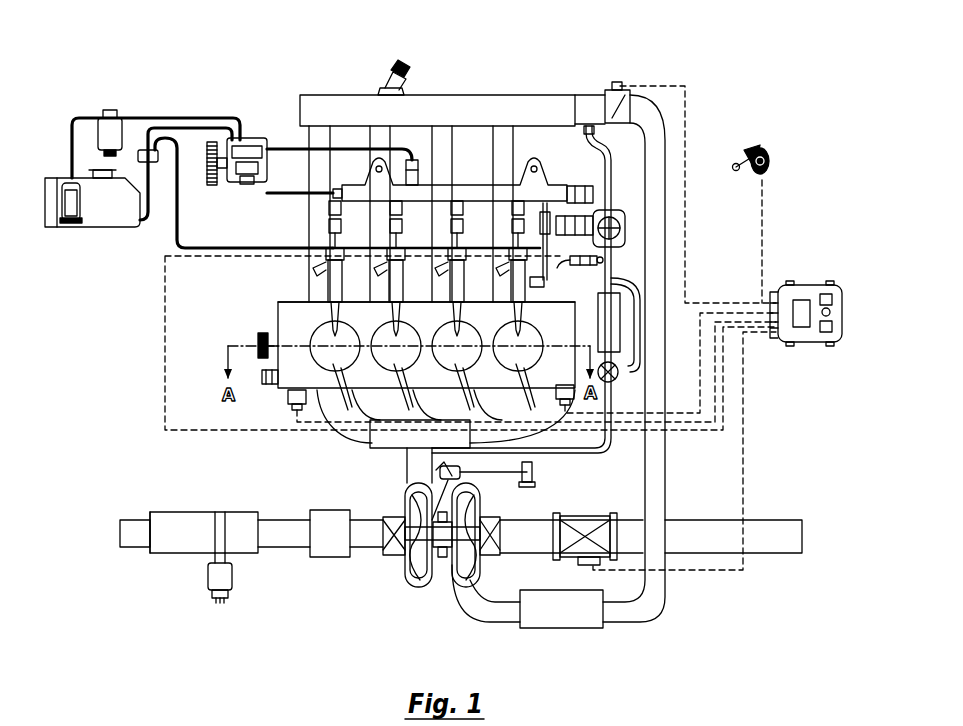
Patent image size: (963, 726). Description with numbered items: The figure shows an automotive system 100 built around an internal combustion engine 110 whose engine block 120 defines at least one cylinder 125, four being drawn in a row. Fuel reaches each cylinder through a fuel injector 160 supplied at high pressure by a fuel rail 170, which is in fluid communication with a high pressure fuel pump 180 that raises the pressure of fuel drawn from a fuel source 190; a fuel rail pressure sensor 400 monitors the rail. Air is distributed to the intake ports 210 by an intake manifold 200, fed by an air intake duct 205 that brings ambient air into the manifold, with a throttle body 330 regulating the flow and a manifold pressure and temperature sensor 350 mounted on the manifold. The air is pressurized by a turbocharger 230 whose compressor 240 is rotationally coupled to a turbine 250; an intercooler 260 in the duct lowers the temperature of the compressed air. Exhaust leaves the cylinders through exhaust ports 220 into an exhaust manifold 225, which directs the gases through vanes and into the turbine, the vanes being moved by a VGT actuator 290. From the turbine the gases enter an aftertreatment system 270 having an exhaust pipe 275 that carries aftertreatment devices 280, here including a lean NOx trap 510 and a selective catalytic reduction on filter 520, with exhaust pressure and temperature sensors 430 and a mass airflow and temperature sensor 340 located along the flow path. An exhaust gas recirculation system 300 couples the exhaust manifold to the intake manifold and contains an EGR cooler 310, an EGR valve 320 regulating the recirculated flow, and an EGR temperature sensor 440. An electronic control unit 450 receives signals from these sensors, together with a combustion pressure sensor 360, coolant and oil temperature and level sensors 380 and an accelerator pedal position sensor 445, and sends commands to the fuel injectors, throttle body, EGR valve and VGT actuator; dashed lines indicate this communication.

The automotive system 100 is at (216, 78).
The internal combustion engine 110 is at (527, 93).
The engine block 120 is at (278, 306).
The cylinder 125 is at (538, 325).
The fuel injector 160 is at (335, 283).
The fuel rail 170 is at (363, 195).
The high pressure fuel pump 180 is at (240, 137).
The fuel source 190 is at (115, 213).
The intake manifold 200 is at (443, 110).
The air intake duct 205 is at (657, 495).
The intake port 210 is at (323, 303).
The exhaust port 220 is at (330, 393).
The exhaust manifold 225 is at (304, 516).
The turbocharger 230 is at (413, 597).
The compressor 240 is at (468, 563).
The turbine 250 is at (413, 555).
The intercooler 260 is at (585, 617).
The aftertreatment system 270 is at (220, 498).
The exhaust pipe 275 is at (120, 545).
The exhaust aftertreatment device 280 is at (327, 538).
The VGT actuator 290 is at (458, 478).
The exhaust gas recirculation system 300 is at (578, 462).
The EGR cooler 310 is at (612, 335).
The EGR valve 320 is at (617, 207).
The throttle body 330 is at (617, 82).
The mass airflow and temperature sensor 340 is at (585, 557).
The manifold pressure and temperature sensor 350 is at (391, 82).
The combustion pressure sensor 360 is at (397, 442).
The coolant and oil temperature and level sensors 380 is at (295, 393).
The fuel rail pressure sensor 400 is at (595, 190).
The exhaust pressure and temperature sensors 430 is at (220, 600).
The EGR temperature sensor 440 is at (607, 258).
The accelerator pedal position sensor 445 is at (763, 148).
The electronic control unit 450 is at (810, 285).
The lean NOx trap 510 is at (243, 537).
The selective catalytic reduction on filter 520 is at (183, 530).